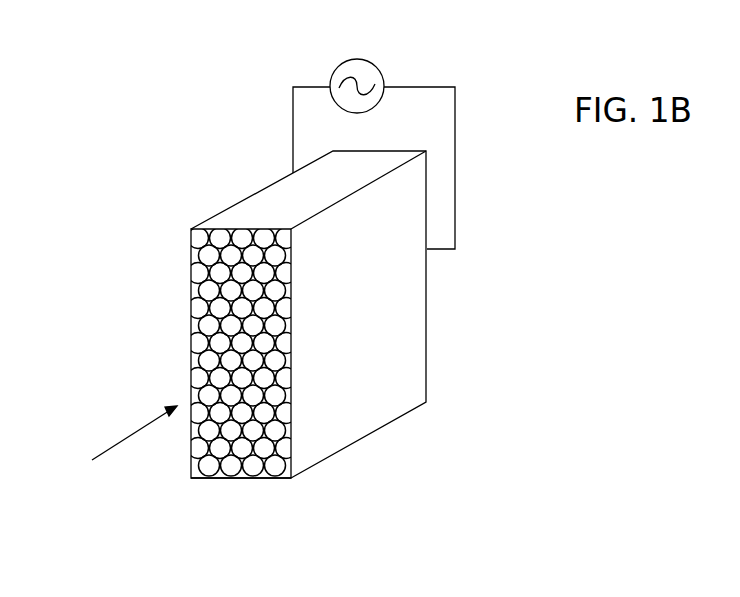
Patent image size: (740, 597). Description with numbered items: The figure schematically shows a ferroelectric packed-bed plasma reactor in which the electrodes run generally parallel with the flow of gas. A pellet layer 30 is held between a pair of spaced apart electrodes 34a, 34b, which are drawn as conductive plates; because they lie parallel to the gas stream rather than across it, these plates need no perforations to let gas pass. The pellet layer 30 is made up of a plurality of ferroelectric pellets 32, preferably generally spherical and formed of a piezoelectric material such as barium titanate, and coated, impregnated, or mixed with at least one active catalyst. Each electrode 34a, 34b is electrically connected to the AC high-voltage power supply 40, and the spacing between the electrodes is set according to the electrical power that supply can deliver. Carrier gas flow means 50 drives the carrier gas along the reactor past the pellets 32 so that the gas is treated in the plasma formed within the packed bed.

The pellet layer 30 is at (197, 266).
The ferroelectric pellets 32 is at (203, 340).
The electrode 34a is at (410, 305).
The electrode 34b is at (190, 452).
The AC high-voltage power supply 40 is at (380, 70).
The carrier gas flow means 50 is at (122, 437).